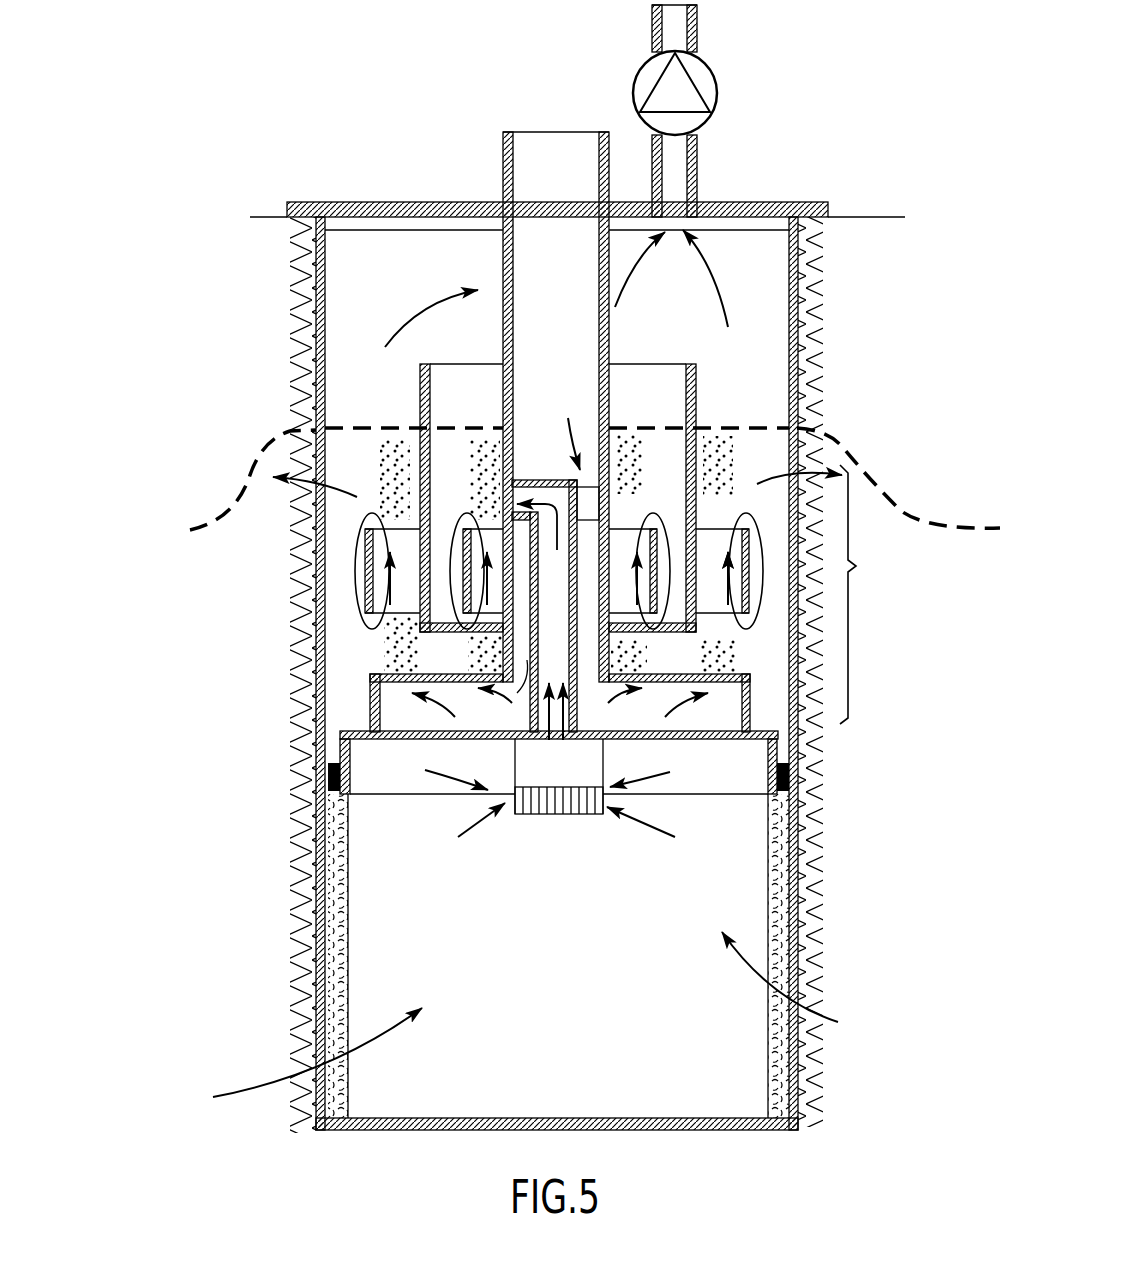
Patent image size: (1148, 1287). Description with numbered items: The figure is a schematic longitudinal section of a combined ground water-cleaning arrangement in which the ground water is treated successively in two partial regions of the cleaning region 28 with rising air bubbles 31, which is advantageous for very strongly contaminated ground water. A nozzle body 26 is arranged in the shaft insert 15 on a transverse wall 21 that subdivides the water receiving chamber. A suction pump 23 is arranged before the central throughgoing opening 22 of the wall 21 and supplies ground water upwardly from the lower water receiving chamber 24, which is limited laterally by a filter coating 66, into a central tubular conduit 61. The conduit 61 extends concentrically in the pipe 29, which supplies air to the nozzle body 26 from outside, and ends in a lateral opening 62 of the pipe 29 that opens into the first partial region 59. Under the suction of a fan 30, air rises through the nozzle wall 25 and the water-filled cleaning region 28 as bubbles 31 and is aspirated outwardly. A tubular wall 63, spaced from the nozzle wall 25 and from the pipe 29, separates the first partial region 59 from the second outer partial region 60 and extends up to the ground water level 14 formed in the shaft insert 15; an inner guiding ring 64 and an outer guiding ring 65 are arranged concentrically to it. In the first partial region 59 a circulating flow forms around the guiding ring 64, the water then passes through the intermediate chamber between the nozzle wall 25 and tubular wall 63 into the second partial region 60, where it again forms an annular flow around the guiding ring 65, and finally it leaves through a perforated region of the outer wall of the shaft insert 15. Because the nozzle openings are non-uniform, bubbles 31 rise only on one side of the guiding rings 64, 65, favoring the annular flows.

The ground water level 14 is at (917, 402).
The shaft insert 15 is at (802, 735).
The transverse wall 21 is at (685, 740).
The central throughgoing opening 22 is at (517, 810).
The suction pump 23 is at (573, 817).
The lower water receiving chamber 24 is at (592, 955).
The nozzle wall 25 is at (373, 707).
The nozzle body 26 is at (403, 712).
The cleaning region 28 is at (906, 557).
The pipe 29 is at (503, 276).
The fan 30 is at (797, 65).
The air bubbles 31 is at (415, 645).
The first partial region 59 is at (652, 450).
The second outer partial region 60 is at (750, 453).
The central tubular conduit 61 is at (530, 639).
The lateral opening 62 is at (507, 497).
The tubular wall 63 is at (695, 458).
The inner guiding ring 64 is at (655, 560).
The outer guiding ring 65 is at (747, 552).
The filter coating 66 is at (780, 853).